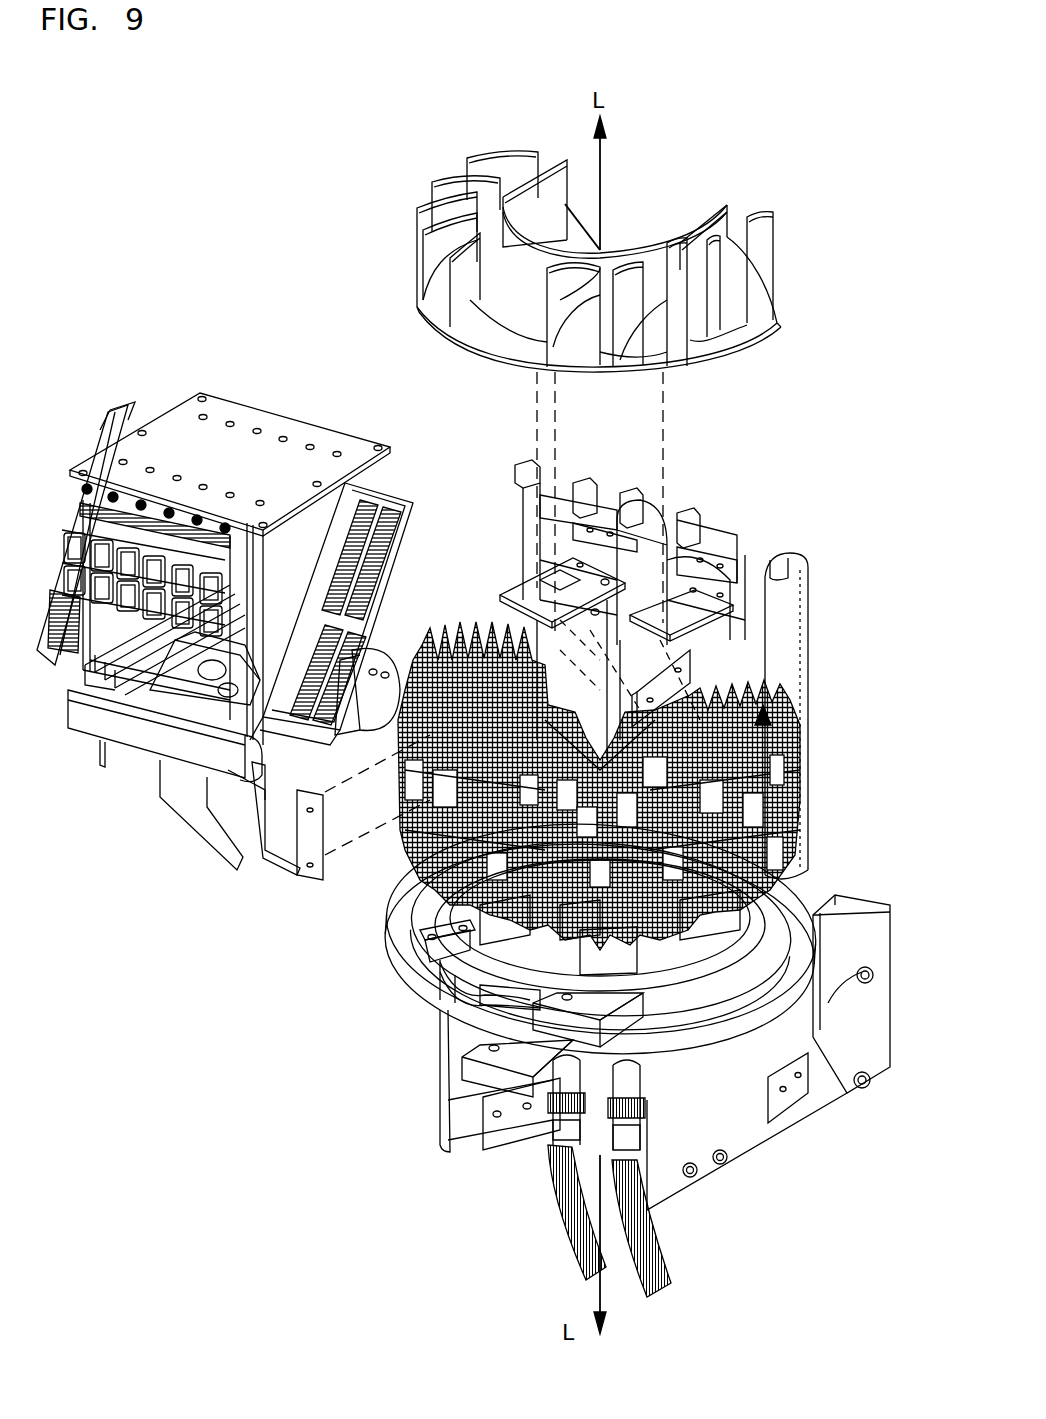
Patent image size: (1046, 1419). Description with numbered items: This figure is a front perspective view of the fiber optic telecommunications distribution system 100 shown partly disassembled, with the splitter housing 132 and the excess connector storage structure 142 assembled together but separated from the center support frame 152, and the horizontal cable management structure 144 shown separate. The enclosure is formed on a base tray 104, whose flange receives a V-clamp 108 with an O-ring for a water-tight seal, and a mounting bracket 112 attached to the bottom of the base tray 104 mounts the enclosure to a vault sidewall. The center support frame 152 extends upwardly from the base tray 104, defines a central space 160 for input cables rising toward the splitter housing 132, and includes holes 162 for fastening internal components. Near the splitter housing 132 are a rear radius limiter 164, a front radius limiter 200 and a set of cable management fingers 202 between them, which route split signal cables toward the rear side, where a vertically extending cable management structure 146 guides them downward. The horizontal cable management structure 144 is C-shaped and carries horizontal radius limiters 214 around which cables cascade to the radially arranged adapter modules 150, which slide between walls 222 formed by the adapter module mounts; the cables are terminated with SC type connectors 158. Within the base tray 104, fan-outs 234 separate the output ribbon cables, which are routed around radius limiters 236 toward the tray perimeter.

The fiber optic telecommunications distribution system 100 is at (280, 272).
The base tray 104 is at (703, 1017).
The V-clamp 108 is at (547, 1023).
The mounting bracket 112 is at (743, 1137).
The splitter housing 132 is at (292, 455).
The excess connector storage structure 142 is at (387, 573).
The horizontal cable management structure 144 is at (703, 335).
The vertically extending cable management structure 146 is at (800, 595).
The adapter modules 150 is at (783, 750).
The center support frame 152 is at (527, 593).
The connectors 158 is at (765, 733).
The space 160 is at (590, 603).
The holes 162 is at (647, 727).
The rear radius limiter 164 is at (397, 683).
The front radius limiter 200 is at (143, 740).
The cable management fingers 202 is at (697, 518).
The horizontal radius limiters 214 is at (463, 283).
The walls 222 is at (777, 770).
The fan-outs 234 is at (440, 958).
The radius limiters 236 is at (733, 931).